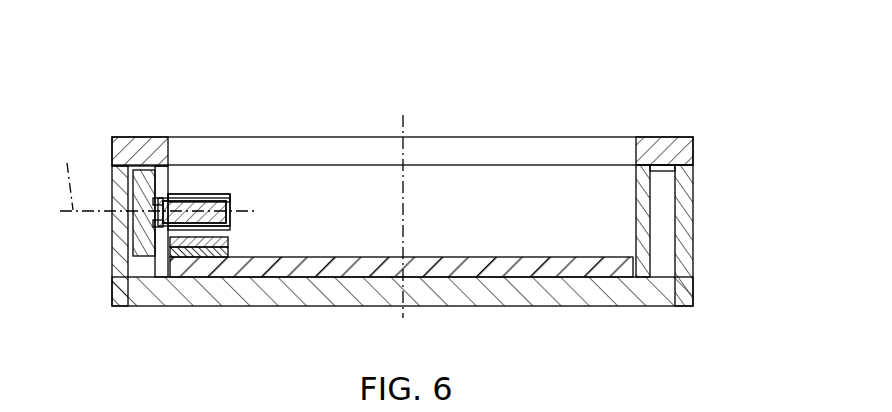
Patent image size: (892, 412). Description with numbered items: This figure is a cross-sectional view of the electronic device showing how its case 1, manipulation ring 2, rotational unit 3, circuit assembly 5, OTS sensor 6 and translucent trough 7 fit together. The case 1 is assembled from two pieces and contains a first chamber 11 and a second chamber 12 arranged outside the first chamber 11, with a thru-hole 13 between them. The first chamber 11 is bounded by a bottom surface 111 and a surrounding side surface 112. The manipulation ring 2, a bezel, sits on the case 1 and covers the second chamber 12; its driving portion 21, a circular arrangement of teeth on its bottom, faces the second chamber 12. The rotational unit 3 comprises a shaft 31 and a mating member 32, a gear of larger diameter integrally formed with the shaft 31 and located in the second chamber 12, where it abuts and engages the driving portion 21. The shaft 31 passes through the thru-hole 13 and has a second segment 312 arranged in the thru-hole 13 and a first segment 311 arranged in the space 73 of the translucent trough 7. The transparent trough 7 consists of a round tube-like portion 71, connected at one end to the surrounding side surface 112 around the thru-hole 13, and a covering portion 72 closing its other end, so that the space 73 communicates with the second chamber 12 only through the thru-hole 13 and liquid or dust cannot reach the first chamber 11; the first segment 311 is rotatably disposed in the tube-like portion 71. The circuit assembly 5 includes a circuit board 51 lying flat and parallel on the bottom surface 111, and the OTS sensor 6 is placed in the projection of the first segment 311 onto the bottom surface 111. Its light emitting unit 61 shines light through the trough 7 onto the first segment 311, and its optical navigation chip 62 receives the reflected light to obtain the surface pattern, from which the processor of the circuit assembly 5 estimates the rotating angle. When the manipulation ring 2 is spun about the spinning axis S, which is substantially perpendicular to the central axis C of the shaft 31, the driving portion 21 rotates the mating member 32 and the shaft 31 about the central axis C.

The case 1 is at (407, 200).
The first chamber 11 is at (402, 200).
The bottom surface 111 is at (558, 276).
The surrounding side surface 112 is at (636, 192).
The second chamber 12 is at (658, 240).
The thru-hole 13 is at (132, 255).
The manipulation ring 2 is at (428, 137).
The driving portion 21 is at (657, 171).
The rotational unit 3 is at (167, 155).
The shaft 31 is at (192, 172).
The first segment 311 is at (205, 200).
The second segment 312 is at (156, 197).
The mating member 32 is at (112, 165).
The circuit assembly 5 is at (401, 238).
The circuit board 51 is at (435, 270).
The OTS sensor 6 is at (197, 308).
The light emitting unit 61 is at (175, 258).
The optical navigation chip 62 is at (213, 256).
The translucent trough 7 is at (239, 211).
The tube-like portion 71 is at (217, 196).
The covering portion 72 is at (228, 211).
The space 73 is at (226, 235).
The central axis C is at (157, 174).
The spinning axis S is at (403, 128).